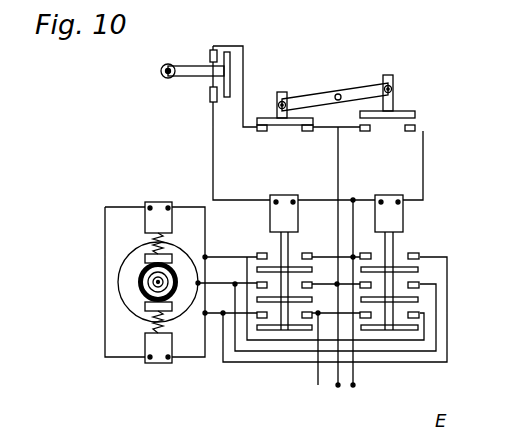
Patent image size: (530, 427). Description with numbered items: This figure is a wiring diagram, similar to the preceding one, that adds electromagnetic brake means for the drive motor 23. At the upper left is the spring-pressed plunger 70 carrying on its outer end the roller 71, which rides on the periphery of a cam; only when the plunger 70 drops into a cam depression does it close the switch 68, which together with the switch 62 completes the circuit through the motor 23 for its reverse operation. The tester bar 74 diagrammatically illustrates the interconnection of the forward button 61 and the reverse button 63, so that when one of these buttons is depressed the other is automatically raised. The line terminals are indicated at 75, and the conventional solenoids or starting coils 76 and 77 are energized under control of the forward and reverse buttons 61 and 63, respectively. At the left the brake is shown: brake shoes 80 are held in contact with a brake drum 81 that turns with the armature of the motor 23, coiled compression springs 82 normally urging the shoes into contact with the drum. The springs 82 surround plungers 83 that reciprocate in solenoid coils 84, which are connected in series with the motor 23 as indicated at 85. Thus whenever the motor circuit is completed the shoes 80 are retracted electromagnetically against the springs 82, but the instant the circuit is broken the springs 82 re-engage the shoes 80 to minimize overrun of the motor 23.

The motor 23 is at (122, 295).
The forward button 61 is at (389, 119).
The switch 62 is at (313, 86).
The reverse button 63 is at (278, 131).
The switch 68 is at (230, 63).
The plunger 70 is at (197, 78).
The roller 71 is at (168, 64).
The tester bar 74 is at (357, 87).
The line terminals 75 is at (317, 385).
The solenoid 76 is at (403, 220).
The solenoid 77 is at (275, 213).
The brake shoes 80 is at (145, 307).
The brake drum 81 is at (138, 281).
The coiled compression springs 82 is at (145, 340).
The plungers 83 is at (166, 318).
The solenoid coils 84 is at (160, 363).
The series connection 85 is at (205, 235).